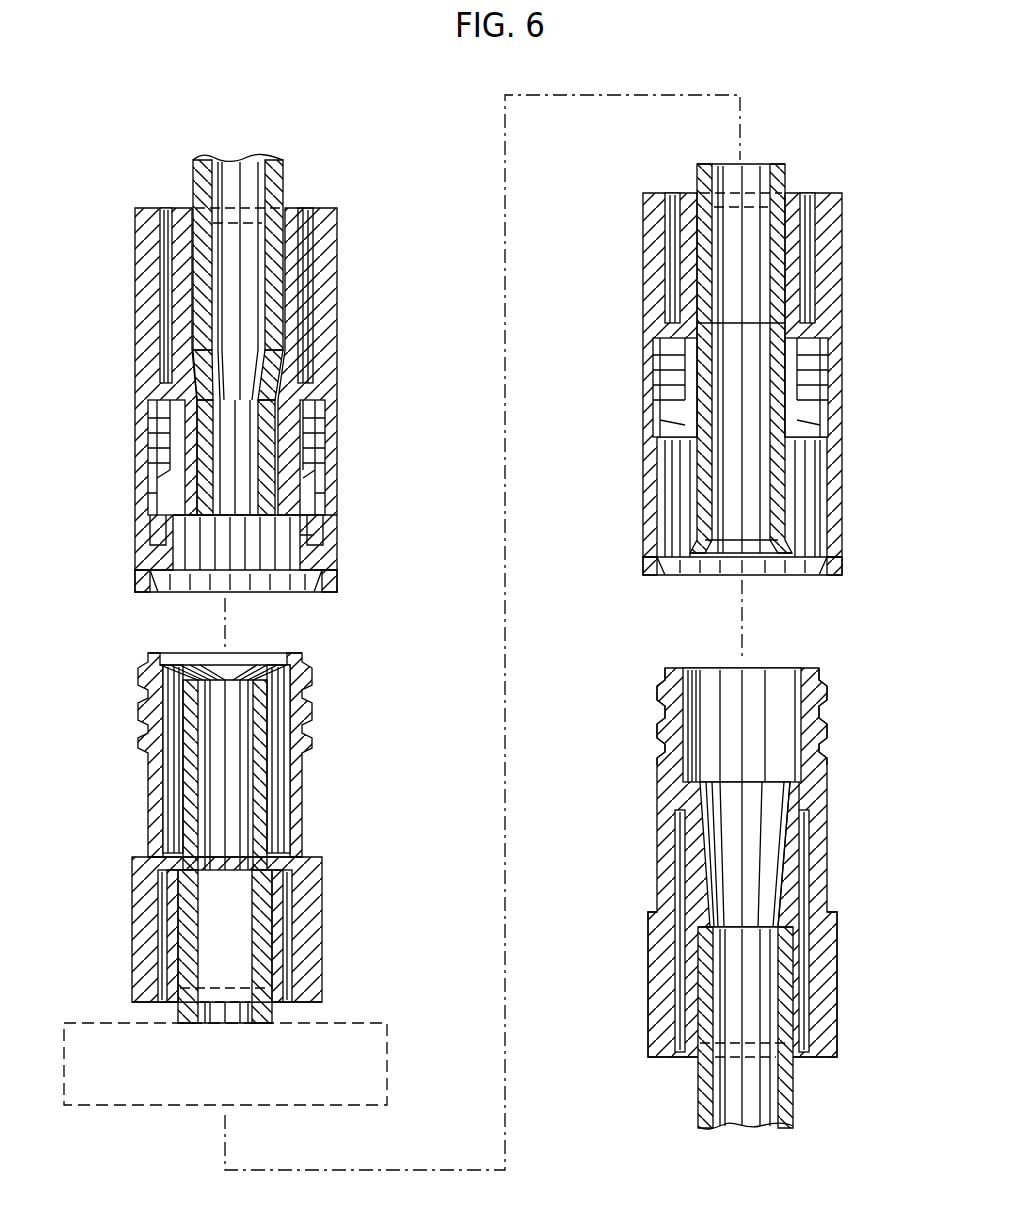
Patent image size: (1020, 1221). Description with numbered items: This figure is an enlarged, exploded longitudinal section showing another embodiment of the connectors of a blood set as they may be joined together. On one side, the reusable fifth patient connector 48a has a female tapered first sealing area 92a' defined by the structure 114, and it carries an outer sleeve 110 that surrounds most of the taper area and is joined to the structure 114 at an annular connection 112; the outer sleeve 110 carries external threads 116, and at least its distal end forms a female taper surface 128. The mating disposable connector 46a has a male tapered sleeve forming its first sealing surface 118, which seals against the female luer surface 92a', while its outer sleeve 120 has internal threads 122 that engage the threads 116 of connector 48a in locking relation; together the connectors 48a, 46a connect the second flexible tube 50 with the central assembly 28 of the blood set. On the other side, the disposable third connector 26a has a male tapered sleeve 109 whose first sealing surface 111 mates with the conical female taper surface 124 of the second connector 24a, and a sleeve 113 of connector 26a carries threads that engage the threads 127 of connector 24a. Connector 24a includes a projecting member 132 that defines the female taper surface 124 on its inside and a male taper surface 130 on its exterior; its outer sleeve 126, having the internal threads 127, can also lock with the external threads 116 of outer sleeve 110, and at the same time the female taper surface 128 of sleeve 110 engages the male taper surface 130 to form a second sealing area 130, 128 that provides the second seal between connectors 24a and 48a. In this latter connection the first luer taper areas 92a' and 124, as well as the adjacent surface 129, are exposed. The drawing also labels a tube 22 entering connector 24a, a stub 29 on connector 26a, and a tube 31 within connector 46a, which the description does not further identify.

The tube 22 is at (193, 200).
The second connector 24a is at (128, 270).
The internal threads 127 is at (150, 406).
The outer sleeve 126 is at (150, 443).
The adjacent surface 129 is at (220, 498).
The female taper surface 124 is at (185, 528).
The projecting member 132 is at (290, 412).
The male tapered surface 130 is at (305, 512).
The sleeve 113 is at (305, 670).
The male tapered sleeve 109 is at (267, 752).
The first sealing surface 111 is at (236, 804).
The third connector 26a is at (126, 906).
The central assembly 28 is at (96, 1012).
The connection stub 29 is at (272, 1017).
The tube 31 is at (787, 183).
The disposable connector 46a is at (835, 352).
The internal threads 122 is at (805, 406).
The outer sleeve 120 is at (842, 457).
The first sealing surface 118 is at (783, 530).
The female taper surface 128 is at (690, 700).
The female tapered first sealing area 92a' is at (804, 783).
The external threads 116 is at (828, 742).
The fifth patient connector 48a is at (836, 782).
The annular connection 112 is at (795, 806).
The structure 114 is at (795, 880).
The outer sleeve 110 is at (830, 895).
The second flexible tube 50 is at (800, 1092).